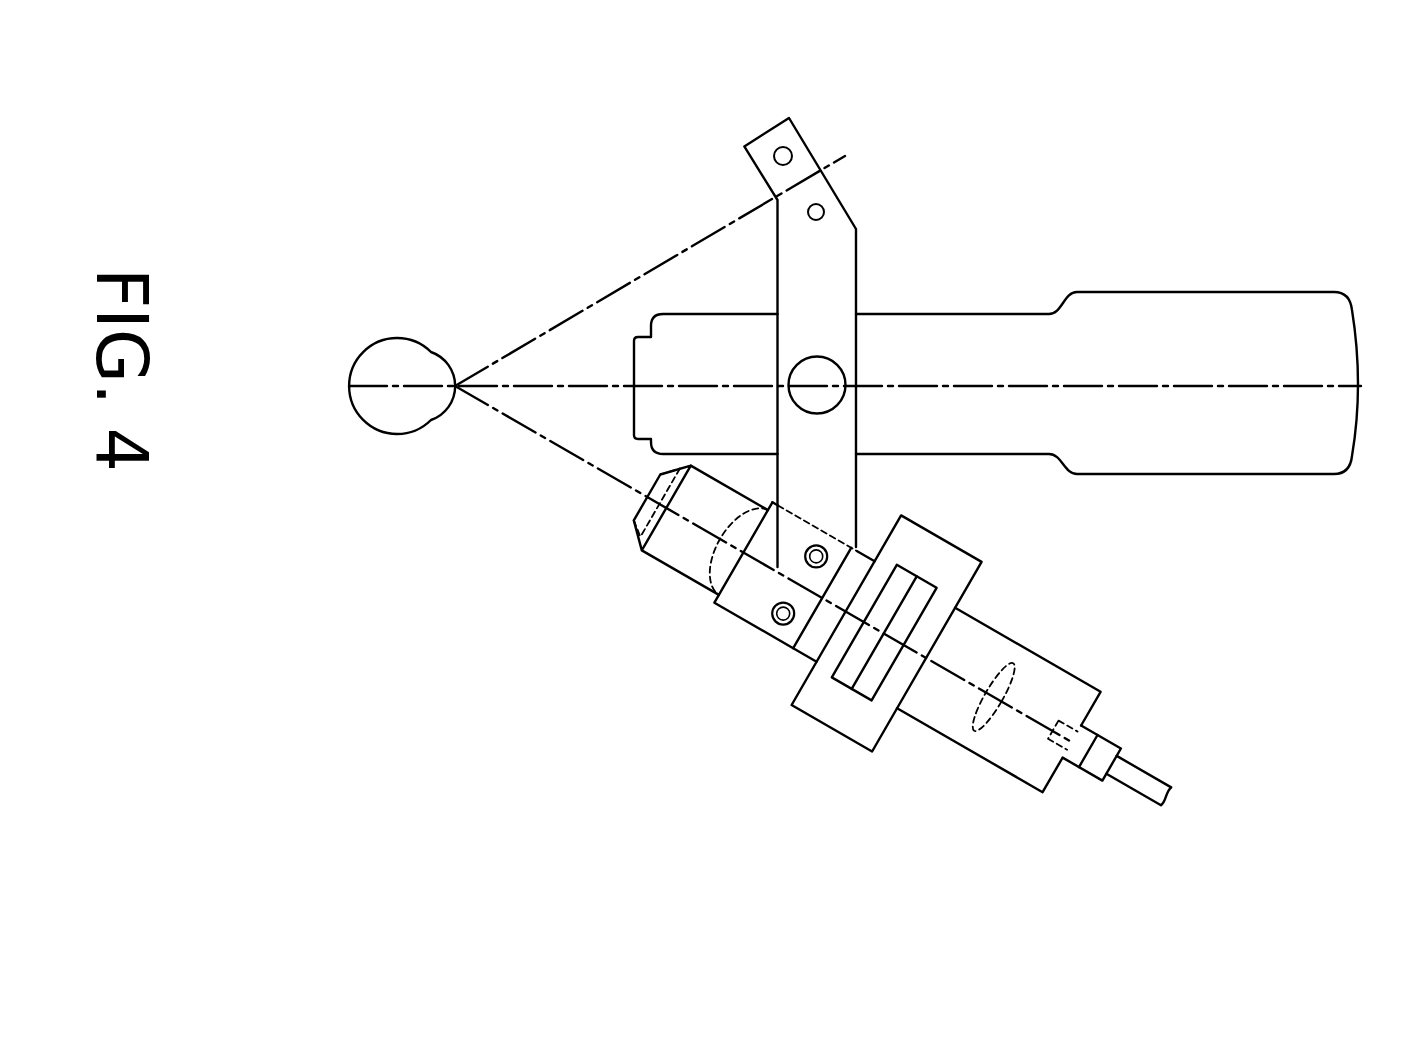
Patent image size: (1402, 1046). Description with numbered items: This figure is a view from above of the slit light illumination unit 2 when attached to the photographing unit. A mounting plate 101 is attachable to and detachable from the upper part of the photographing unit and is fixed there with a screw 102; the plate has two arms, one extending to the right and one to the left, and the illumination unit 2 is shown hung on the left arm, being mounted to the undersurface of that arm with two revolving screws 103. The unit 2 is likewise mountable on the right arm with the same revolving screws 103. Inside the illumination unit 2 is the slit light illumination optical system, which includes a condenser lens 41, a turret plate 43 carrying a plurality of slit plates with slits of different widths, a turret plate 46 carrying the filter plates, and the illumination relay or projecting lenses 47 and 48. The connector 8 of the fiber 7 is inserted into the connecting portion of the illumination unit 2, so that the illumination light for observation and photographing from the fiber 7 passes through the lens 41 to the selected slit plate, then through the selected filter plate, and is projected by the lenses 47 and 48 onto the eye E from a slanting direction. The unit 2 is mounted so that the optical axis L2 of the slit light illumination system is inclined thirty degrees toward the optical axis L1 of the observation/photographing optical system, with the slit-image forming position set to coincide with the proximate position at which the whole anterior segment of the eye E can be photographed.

The illumination unit 2 is at (924, 685).
The fiber 7 is at (1153, 772).
The connector 8 is at (1113, 738).
The condenser lens 41 is at (1013, 680).
The turret plate 43 is at (940, 598).
The turret plate 46 is at (845, 688).
The illumination relay lens 47 is at (707, 590).
The illumination relay lens 48 is at (645, 552).
The mounting plate 101 is at (838, 199).
The screw 102 is at (855, 366).
The revolving screws 103 is at (823, 542).
The optical axis L1 is at (1170, 383).
The optical axis L2 is at (602, 472).
The eye E is at (377, 415).